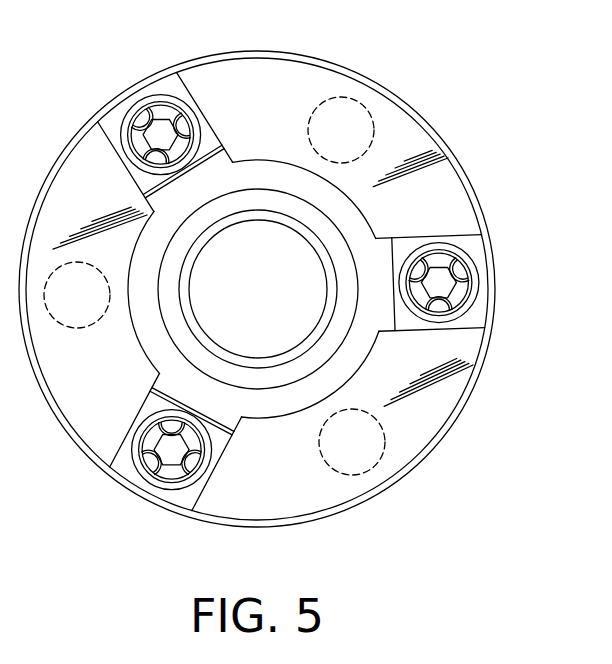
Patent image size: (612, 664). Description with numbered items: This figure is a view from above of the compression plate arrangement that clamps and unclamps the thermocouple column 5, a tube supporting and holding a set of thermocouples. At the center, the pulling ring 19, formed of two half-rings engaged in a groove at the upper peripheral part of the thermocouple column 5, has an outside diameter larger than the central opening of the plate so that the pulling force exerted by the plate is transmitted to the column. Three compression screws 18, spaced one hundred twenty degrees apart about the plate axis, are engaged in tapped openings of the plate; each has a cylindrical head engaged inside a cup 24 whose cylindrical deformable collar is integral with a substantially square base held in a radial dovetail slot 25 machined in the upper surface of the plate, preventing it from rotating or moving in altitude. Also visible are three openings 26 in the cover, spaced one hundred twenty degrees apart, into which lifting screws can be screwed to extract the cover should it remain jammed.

The thermocouple column 5 is at (248, 303).
The compression screw 18 is at (160, 130).
The pulling ring 19 is at (343, 325).
The cup 24 is at (186, 118).
The radial dovetail slot 25 is at (470, 242).
The opening 26 is at (352, 465).